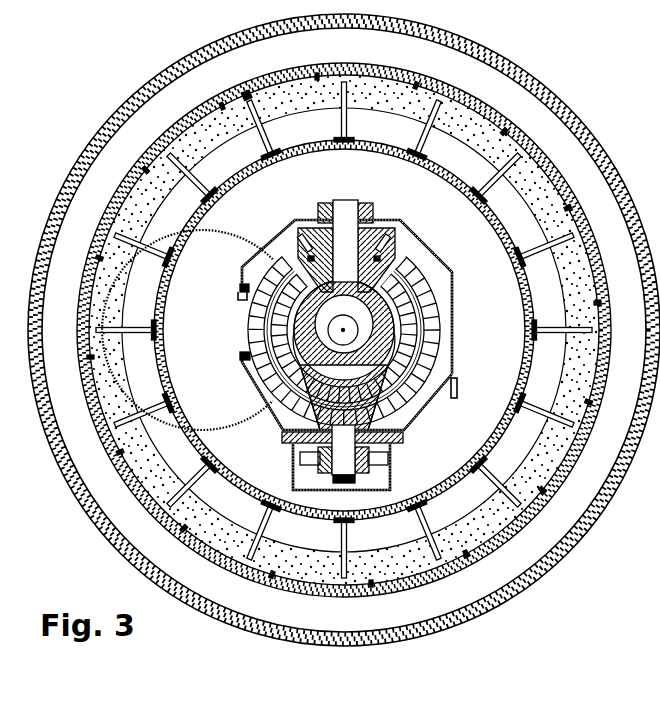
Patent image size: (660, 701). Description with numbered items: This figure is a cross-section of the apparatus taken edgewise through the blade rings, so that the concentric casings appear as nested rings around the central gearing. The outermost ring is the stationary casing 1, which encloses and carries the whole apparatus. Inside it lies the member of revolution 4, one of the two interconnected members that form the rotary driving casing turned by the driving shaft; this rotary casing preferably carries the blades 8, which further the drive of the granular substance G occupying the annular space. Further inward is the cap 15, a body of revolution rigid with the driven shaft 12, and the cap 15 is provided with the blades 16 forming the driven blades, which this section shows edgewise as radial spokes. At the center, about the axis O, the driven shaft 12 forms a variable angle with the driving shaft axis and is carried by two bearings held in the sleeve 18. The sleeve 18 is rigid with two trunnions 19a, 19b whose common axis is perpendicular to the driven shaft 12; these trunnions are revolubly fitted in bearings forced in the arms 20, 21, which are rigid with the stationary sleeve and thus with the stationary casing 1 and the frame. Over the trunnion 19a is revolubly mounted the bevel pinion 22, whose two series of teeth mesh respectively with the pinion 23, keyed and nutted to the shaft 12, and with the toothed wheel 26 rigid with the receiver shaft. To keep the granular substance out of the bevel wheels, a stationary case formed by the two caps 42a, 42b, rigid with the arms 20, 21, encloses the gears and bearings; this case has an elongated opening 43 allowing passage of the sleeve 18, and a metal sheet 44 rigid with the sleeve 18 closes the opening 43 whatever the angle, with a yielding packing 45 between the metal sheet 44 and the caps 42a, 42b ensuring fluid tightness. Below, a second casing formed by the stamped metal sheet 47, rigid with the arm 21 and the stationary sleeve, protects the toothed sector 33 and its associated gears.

The stationary casing 1 is at (117, 117).
The member of revolution 4 is at (195, 120).
The granular filling G is at (305, 95).
The blades 8 is at (258, 90).
The cap 15 is at (312, 150).
The blades 16 is at (265, 142).
The driven shaft 12 is at (342, 340).
The sleeve 18 is at (353, 333).
The axis of rotation O is at (343, 330).
The trunnion 19a is at (345, 205).
The trunnion 19b is at (336, 478).
The arm 20 is at (372, 212).
The bevel pinion 22 is at (313, 222).
The pinion 23 is at (420, 300).
The toothed wheel 26 is at (451, 380).
The cap 42a is at (262, 249).
The cap 42b is at (263, 408).
The elongated opening 43 is at (243, 293).
The metal sheet 44 is at (247, 332).
The yielding packing 45 is at (240, 287).
The arm 21 is at (403, 440).
The stamped metal sheet 47 is at (293, 477).
The toothed sector 33 is at (364, 483).